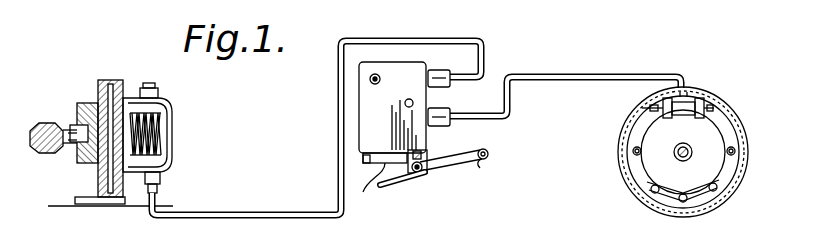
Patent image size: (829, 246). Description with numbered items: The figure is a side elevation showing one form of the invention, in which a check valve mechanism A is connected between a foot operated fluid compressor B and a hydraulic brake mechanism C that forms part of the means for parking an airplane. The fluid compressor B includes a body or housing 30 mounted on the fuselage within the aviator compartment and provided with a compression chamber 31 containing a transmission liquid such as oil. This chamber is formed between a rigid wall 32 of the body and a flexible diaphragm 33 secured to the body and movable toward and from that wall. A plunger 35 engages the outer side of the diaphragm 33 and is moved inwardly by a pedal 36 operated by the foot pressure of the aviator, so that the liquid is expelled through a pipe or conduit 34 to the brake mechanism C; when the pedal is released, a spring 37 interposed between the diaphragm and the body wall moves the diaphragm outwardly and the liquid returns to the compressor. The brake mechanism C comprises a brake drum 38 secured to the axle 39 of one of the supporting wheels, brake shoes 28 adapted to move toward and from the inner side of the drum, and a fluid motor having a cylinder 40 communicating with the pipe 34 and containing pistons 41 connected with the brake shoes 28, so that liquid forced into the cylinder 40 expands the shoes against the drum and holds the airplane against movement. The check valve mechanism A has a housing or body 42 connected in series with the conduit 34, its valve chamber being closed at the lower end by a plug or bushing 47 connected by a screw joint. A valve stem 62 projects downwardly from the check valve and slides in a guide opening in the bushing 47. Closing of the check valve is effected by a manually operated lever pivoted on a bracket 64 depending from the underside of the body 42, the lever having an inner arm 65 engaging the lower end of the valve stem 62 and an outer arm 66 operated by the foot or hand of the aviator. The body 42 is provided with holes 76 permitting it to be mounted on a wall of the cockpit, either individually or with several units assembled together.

The check valve mechanism A is at (448, 66).
The fluid compressor B is at (90, 82).
The brake mechanism C is at (683, 146).
The brake shoes 28 is at (730, 138).
The body or housing 30 is at (123, 192).
The compression chamber 31 is at (128, 110).
The rigid wall 32 is at (167, 137).
The flexible diaphragm 33 is at (100, 172).
The pipe or conduit 34 is at (416, 128).
The plunger 35 is at (88, 153).
The pedal 36 is at (47, 125).
The spring 37 is at (167, 155).
The brake drum 38 is at (740, 184).
The axle 39 is at (678, 156).
The cylinder 40 is at (679, 116).
The pistons 41 is at (642, 108).
The housing or body of the check valve mechanism 42 is at (423, 97).
The plug or bushing 47 is at (373, 157).
The valve stem 62 is at (370, 186).
The bracket 64 is at (427, 158).
The inner arm 65 is at (397, 183).
The outer arm 66 is at (486, 173).
The holes 76 is at (376, 76).